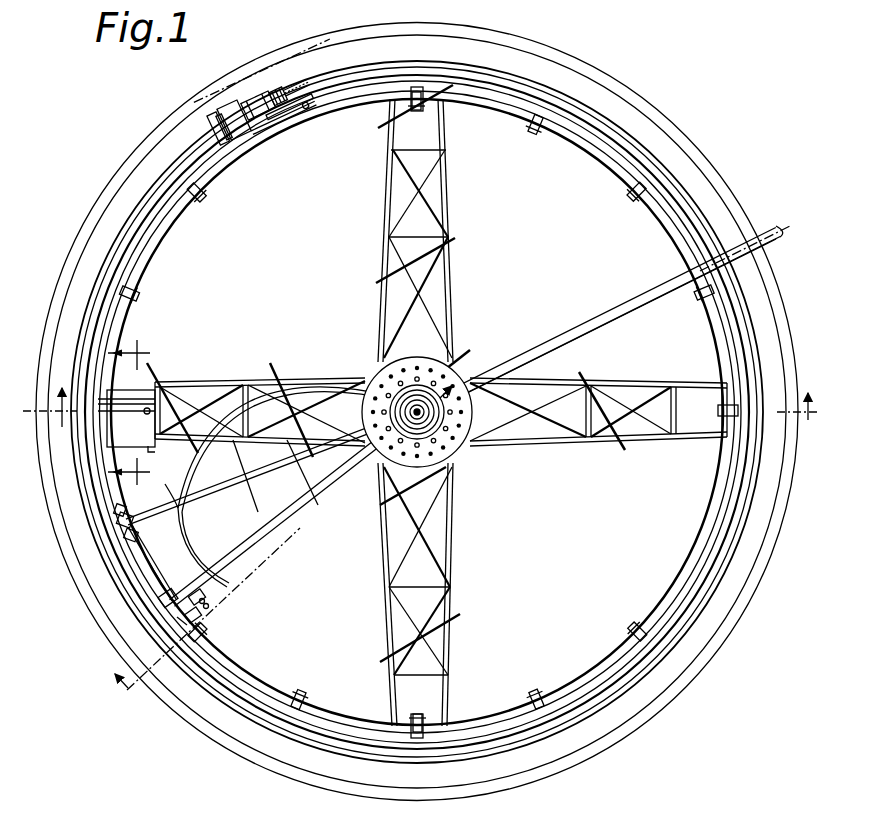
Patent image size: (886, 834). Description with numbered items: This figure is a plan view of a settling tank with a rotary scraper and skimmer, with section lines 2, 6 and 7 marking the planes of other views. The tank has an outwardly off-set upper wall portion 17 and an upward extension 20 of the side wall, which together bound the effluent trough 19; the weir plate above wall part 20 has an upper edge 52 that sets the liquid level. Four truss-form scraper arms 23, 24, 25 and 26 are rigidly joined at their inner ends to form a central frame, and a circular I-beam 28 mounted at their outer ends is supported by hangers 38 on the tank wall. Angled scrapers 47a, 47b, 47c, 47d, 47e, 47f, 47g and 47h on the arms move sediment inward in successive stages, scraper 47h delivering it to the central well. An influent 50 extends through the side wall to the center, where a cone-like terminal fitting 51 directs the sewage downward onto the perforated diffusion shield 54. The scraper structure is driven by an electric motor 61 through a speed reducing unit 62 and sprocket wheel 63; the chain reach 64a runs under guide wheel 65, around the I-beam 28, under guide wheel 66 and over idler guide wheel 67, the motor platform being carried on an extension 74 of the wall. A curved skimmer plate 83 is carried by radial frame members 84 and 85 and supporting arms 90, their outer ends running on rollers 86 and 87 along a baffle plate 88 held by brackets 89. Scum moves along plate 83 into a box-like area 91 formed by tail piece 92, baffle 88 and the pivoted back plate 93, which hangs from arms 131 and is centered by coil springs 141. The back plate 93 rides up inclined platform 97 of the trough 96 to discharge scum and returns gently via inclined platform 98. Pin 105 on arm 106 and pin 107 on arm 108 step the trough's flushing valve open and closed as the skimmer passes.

The outwardly off-set cylindrical upper wall portion 17 is at (687, 145).
The effluent trough 19 is at (640, 128).
The upward extension of the wall 20 is at (663, 173).
The scraper arm 23 is at (387, 200).
The scraper arm 24 is at (238, 381).
The scraper arm 25 is at (390, 583).
The scraper arm 26 is at (552, 443).
The circular I-beam 28 is at (672, 220).
The hanger 38 is at (203, 188).
The scraper 47a is at (443, 118).
The scraper 47b is at (158, 374).
The scraper 47c is at (440, 632).
The scraper 47d is at (582, 372).
The scraper 47e is at (445, 260).
The scraper 47f is at (280, 370).
The scraper 47g is at (440, 496).
The scraper 47h is at (447, 360).
The influent 50 is at (620, 306).
The terminal fitting 51 is at (452, 430).
The upper edge of weir plate 52 is at (660, 203).
The diffusion shield 54 is at (412, 362).
The electric motor 61 is at (248, 84).
The worm and worm wheel speed reducing unit 62 is at (277, 72).
The sprocket wheel 63 is at (304, 92).
The reach of the chain 64a is at (293, 122).
The guide wheel 65 is at (260, 128).
The guide wheel 66 is at (350, 73).
The idler guide wheel 67 is at (308, 110).
The extension of the wall part 74 is at (228, 100).
The skimmer plate 83 is at (198, 482).
The skimmer frame member 84 is at (212, 478).
The skimmer frame member 85 is at (258, 552).
The roller 86 is at (130, 523).
The roller 87 is at (167, 598).
The baffle plate 88 is at (592, 155).
The bracket 89 is at (548, 123).
The supporting arm 90 is at (262, 492).
The box-like area 91 is at (156, 558).
The tail piece 92 is at (196, 552).
The back plate 93 is at (204, 594).
The trough 96 is at (116, 398).
The inclined platform 97 is at (158, 456).
The inclined platform 98 is at (143, 403).
The pin 105 is at (132, 538).
The arm 106 is at (118, 520).
The valve operating pin 107 is at (196, 618).
The arm 108 is at (178, 620).
The arms 131 is at (207, 608).
The coil springs 141 is at (203, 603).
The section line 2— 2 is at (420, 414).
The section line 6— 6 is at (286, 542).
The section line 7— 7 is at (129, 415).